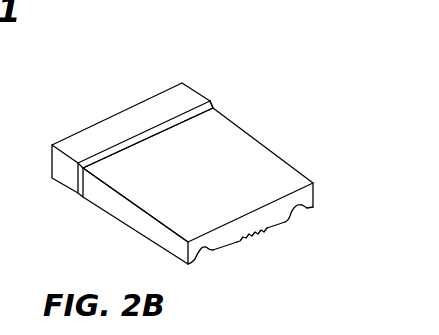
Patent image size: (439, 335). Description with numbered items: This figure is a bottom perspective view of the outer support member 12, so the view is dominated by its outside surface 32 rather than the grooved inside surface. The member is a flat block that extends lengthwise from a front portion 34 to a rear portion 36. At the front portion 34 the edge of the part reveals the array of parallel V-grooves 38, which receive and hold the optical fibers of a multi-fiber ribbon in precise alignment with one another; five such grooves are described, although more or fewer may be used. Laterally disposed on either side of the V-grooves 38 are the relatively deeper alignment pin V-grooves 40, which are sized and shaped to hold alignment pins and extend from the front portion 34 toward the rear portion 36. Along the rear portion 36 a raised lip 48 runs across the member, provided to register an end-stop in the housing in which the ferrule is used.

The outer support member 12 is at (163, 54).
The outside surface 32 is at (220, 150).
The front portion 34 is at (296, 169).
The rear portion 36 is at (42, 185).
The V-grooves 38 is at (263, 236).
The alignment pin V-grooves 40 is at (297, 212).
The lip 48 is at (113, 135).